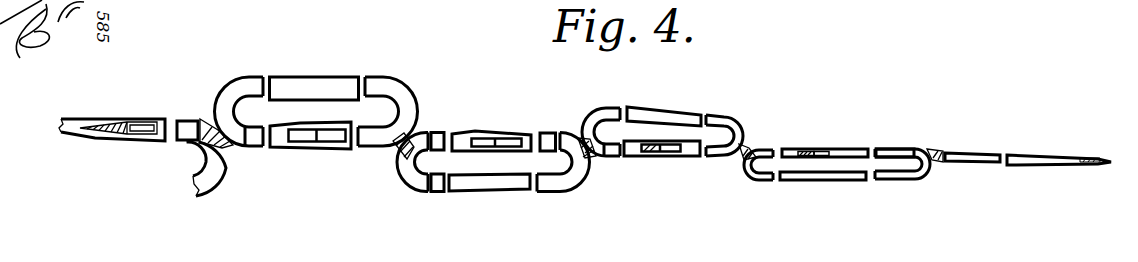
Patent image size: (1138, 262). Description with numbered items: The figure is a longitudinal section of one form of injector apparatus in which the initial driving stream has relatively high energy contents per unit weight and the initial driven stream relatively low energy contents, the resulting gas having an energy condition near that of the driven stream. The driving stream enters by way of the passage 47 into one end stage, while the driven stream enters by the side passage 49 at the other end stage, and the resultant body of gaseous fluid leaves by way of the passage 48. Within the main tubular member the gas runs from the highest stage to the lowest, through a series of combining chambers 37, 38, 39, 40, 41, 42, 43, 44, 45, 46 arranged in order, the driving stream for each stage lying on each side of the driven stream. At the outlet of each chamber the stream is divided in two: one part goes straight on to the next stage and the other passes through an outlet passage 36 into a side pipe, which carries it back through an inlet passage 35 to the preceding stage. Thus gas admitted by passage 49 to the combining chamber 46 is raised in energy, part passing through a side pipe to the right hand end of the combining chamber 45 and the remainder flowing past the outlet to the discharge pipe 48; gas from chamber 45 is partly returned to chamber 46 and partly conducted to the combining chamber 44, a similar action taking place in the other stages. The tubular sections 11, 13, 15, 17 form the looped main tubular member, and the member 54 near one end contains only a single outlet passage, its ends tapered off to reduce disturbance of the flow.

The first U-shaped tube section 11 is at (328, 90).
The second U-shaped tube section 13 is at (500, 182).
The third U-shaped tube section 15 is at (675, 117).
The fourth U-shaped tube section 17 is at (827, 175).
The inlet passage 35 is at (808, 152).
The outlet passage 36 is at (828, 152).
The combining chamber 37 is at (975, 157).
The combining chamber 38 is at (902, 155).
The combining chamber 39 is at (793, 140).
The combining chamber 40 is at (688, 145).
The combining chamber 41 is at (633, 148).
The combining chamber 42 is at (547, 140).
The combining chamber 43 is at (460, 140).
The combining chamber 44 is at (352, 140).
The combining chamber 45 is at (280, 138).
The combining chamber 46 is at (197, 131).
The passage 47 is at (1105, 168).
The discharge pipe 48 is at (72, 127).
The side passage 49 is at (214, 175).
The member 54 is at (113, 125).